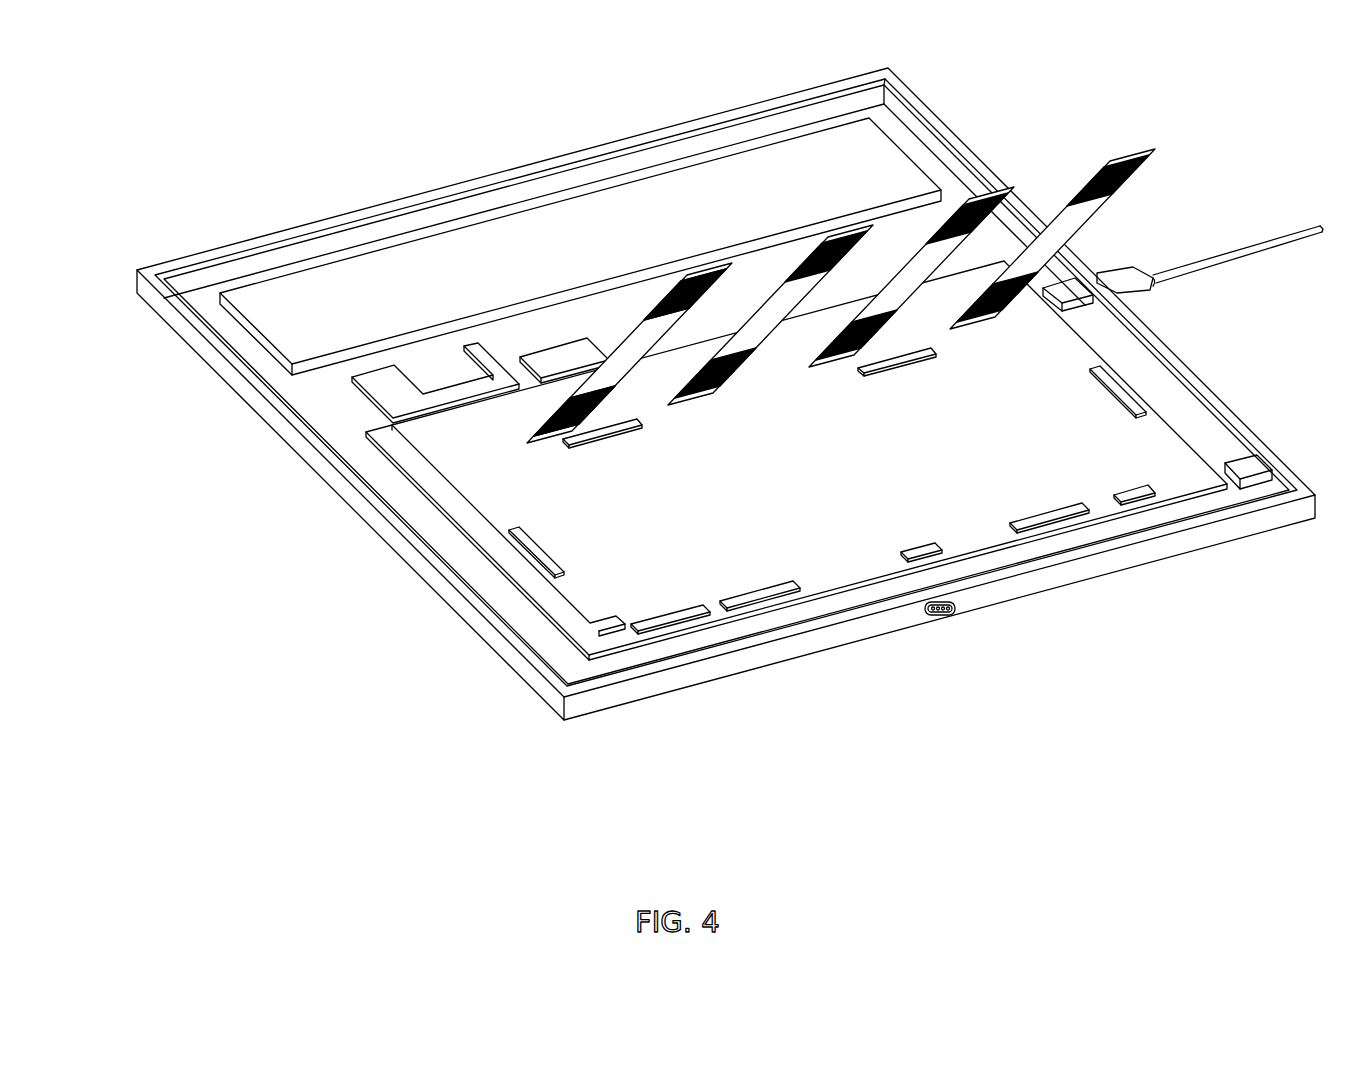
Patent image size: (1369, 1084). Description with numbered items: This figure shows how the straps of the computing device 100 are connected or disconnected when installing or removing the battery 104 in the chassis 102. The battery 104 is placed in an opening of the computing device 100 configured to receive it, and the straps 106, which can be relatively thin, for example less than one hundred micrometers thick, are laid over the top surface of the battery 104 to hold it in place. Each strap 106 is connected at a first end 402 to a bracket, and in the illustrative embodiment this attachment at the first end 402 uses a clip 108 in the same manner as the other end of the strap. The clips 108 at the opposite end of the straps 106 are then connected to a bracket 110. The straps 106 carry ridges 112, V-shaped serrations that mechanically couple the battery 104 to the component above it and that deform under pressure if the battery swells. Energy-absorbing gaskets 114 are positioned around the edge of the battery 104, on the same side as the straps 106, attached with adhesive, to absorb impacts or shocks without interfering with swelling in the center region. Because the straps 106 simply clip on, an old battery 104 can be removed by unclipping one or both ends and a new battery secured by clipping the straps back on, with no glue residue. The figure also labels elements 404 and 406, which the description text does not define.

The computing device 100 is at (696, 406).
The chassis 102 is at (492, 638).
The battery 104 is at (585, 642).
The straps 106 is at (577, 372).
The clip 108 is at (717, 272).
The bracket 110 is at (815, 607).
The ridges 112 is at (547, 423).
The energy-absorbing gaskets 114 is at (778, 598).
The first end 402 is at (731, 369).
The printed circuit board 404 is at (630, 600).
The contact region 406 is at (707, 272).